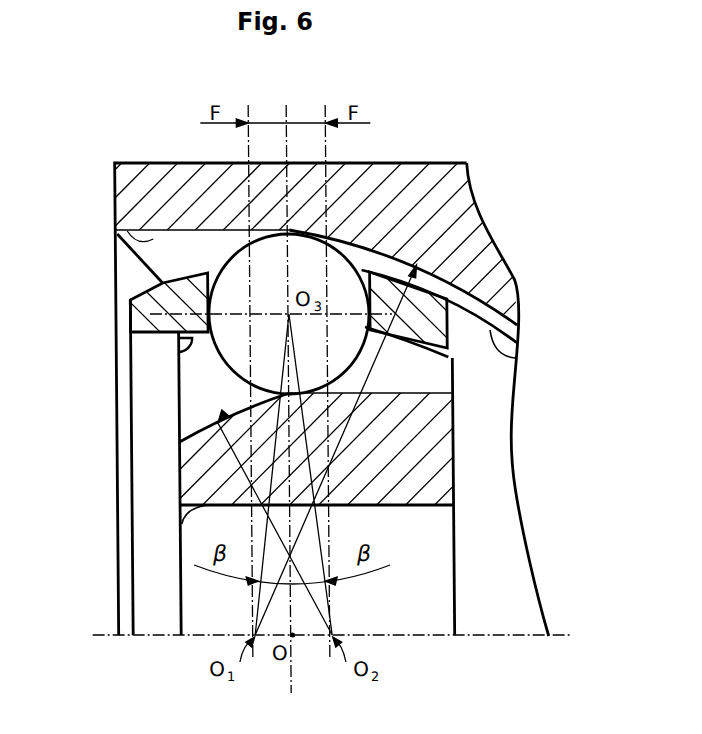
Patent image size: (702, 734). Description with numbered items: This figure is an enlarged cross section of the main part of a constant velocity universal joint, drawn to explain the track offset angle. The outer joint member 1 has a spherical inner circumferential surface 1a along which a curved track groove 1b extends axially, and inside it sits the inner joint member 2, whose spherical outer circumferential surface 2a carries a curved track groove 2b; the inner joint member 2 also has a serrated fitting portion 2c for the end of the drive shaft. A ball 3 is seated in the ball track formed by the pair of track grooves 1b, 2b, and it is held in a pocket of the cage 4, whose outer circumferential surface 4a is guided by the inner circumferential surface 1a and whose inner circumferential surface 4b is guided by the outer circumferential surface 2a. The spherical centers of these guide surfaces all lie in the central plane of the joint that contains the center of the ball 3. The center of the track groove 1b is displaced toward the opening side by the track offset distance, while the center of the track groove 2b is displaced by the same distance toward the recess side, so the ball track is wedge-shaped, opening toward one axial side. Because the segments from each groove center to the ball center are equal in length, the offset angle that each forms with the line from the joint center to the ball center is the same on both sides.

The outer joint member 1 is at (400, 172).
The inner circumferential surface 1a is at (515, 358).
The track groove 1b is at (118, 237).
The inner joint member 2 is at (437, 458).
The outer circumferential surface 2a is at (452, 350).
The track groove 2b is at (225, 410).
The serrated fitting portion 2c is at (182, 521).
The ball 3 is at (226, 264).
The cage 4 is at (137, 318).
The outer circumferential surface 4a is at (437, 291).
The inner circumferential surface 4b is at (185, 342).